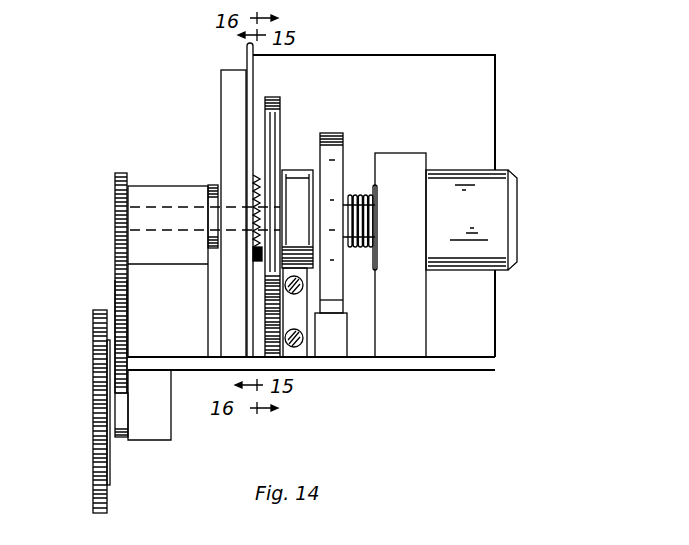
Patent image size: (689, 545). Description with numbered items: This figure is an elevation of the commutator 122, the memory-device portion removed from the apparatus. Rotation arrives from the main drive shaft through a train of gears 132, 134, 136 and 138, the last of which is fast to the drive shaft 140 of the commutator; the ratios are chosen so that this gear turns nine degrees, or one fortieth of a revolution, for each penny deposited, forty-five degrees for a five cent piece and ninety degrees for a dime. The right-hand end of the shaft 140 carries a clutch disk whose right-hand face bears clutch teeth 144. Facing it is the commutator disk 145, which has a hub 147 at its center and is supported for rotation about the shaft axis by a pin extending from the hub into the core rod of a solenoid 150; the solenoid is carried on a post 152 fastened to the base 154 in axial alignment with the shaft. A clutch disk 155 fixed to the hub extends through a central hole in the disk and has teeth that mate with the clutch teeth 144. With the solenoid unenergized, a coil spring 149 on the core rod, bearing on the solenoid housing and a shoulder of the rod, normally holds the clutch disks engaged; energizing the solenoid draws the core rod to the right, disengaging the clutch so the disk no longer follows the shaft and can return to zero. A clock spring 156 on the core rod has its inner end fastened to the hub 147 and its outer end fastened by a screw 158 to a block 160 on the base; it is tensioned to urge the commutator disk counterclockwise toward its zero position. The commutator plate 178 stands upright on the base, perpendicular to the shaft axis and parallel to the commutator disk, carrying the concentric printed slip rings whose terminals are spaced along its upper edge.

The commutator 122 is at (540, 136).
The gear 132 is at (93, 466).
The gear 134 is at (118, 438).
The gear 136 is at (117, 285).
The gear 138 is at (117, 210).
The drive shaft 140 is at (148, 215).
The clutch teeth 144 is at (250, 190).
The commutator disk 145 is at (280, 99).
The hub 147 is at (296, 176).
The coil spring 149 is at (364, 199).
The solenoid 150 is at (503, 235).
The post 152 is at (417, 322).
The base 154 is at (490, 363).
The clutch disk 155 is at (255, 190).
The clock spring 156 is at (331, 134).
The screw 158 is at (335, 312).
The block 160 is at (335, 348).
The commutator plate 178 is at (232, 87).